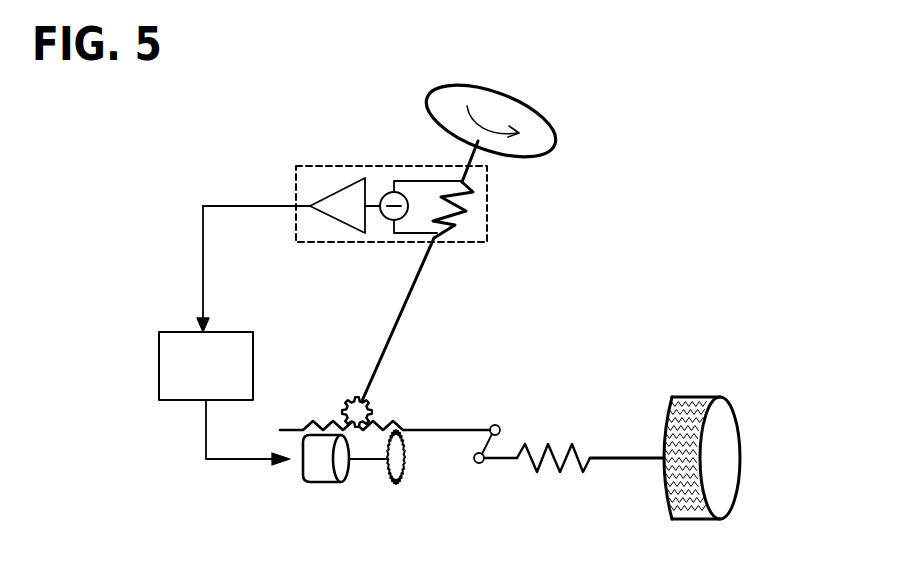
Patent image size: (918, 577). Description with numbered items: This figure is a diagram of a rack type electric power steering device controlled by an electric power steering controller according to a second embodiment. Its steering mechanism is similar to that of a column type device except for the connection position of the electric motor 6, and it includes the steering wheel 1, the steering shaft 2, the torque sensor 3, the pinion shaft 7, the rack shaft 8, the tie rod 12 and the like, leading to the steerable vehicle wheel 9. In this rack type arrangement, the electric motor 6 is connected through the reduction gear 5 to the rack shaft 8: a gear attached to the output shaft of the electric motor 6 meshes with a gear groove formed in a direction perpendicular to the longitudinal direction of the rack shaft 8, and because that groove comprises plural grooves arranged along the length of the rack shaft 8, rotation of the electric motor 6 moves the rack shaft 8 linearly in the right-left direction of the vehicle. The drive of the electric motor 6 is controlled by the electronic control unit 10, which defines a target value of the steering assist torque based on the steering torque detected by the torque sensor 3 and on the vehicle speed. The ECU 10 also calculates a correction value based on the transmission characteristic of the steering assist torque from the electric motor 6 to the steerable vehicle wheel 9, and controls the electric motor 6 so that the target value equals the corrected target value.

The steering wheel 1 is at (557, 140).
The steering shaft 2 is at (413, 295).
The torque sensor 3 is at (488, 217).
The reduction gear 5 is at (419, 466).
The electric motor 6 is at (323, 481).
The pinion shaft 7 is at (373, 380).
The rack shaft 8 is at (473, 428).
The steerable vehicle wheel 9 is at (690, 397).
The electronic control unit (ECU) 10 is at (177, 331).
The tie rod 12 is at (572, 444).